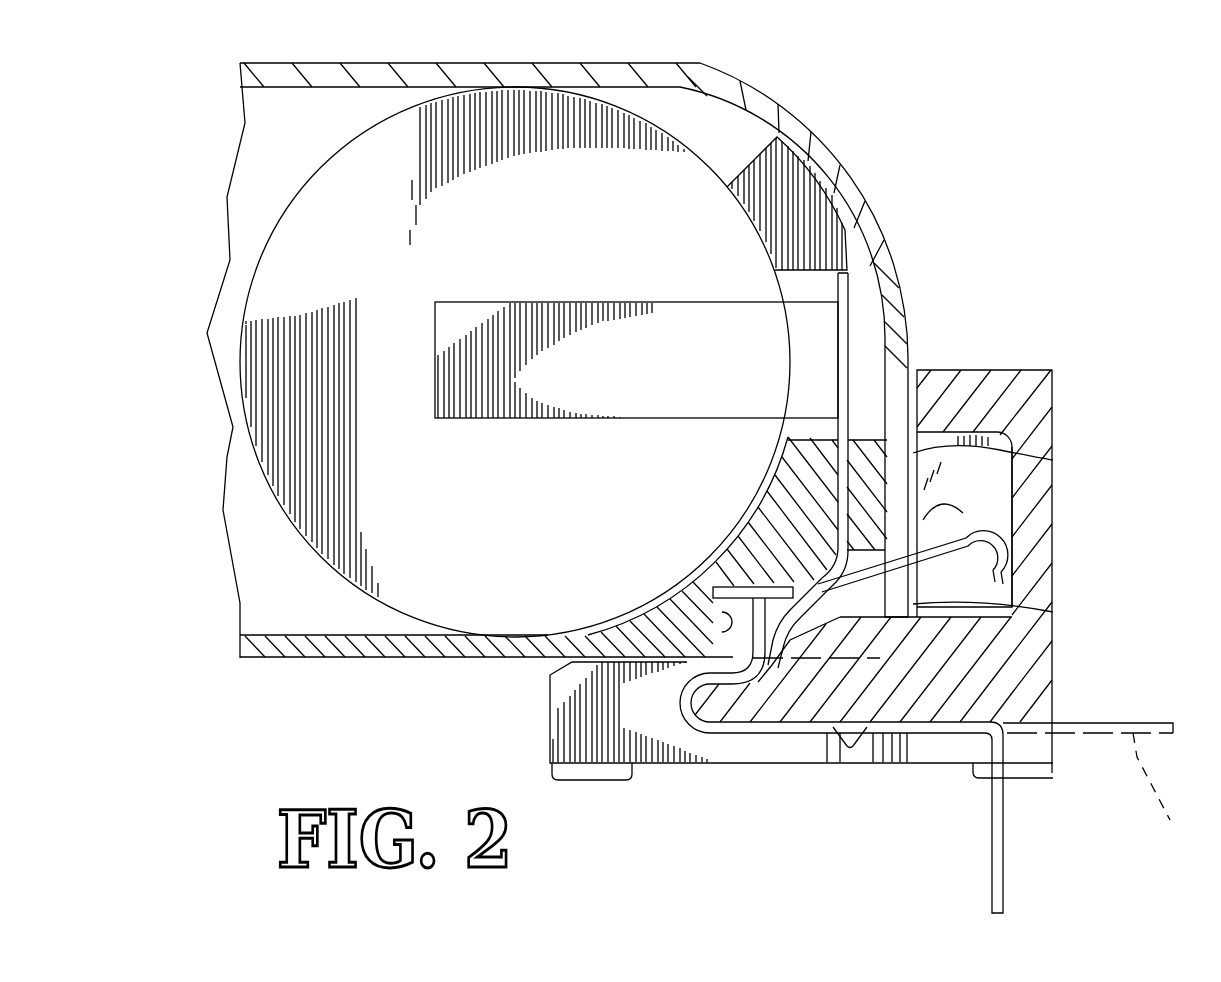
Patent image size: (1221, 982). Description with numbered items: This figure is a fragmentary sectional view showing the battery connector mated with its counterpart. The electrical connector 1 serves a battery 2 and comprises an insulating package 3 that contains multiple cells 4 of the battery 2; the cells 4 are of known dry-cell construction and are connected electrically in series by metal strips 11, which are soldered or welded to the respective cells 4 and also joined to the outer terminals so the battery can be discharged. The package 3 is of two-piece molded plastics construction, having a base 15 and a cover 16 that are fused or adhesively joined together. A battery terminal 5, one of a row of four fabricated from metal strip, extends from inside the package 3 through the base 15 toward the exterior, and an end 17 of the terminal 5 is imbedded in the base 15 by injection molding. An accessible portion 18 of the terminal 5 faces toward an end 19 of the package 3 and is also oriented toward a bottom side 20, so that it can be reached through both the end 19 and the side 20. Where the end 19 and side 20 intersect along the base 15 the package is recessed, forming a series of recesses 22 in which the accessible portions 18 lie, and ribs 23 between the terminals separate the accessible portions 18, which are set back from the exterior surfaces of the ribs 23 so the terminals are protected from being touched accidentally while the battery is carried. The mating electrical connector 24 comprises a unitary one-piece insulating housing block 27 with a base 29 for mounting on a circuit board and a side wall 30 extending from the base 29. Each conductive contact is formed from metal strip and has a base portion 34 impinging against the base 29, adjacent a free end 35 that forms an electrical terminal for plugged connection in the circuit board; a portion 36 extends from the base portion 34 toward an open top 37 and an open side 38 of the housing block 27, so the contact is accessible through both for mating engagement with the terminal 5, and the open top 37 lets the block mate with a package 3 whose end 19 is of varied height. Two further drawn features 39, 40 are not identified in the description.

The electrical connector 1 is at (774, 89).
The battery 2 is at (274, 209).
The insulating package 3 is at (226, 71).
The cells 4 is at (579, 251).
The battery terminal 5 is at (829, 472).
The metal strips 11 is at (681, 371).
The base 15 is at (400, 650).
The cover 16 is at (887, 230).
The end 17 is at (720, 577).
The accessible portion 18 is at (727, 547).
The end 19 is at (1053, 460).
The bottom side 20 is at (801, 721).
The recesses 22 is at (695, 650).
The ribs 23 is at (1053, 612).
The mating electrical connector 24 is at (1068, 393).
The housing block 27 is at (1037, 693).
The base 29 is at (797, 713).
The side wall 30 is at (1053, 540).
The base portion 34 is at (905, 733).
The free end 35 is at (1003, 858).
The portion 36 is at (935, 560).
The open top 37 is at (886, 378).
The open side 38 is at (710, 645).
The spring arm 39 is at (990, 545).
The wall 40 is at (1027, 514).